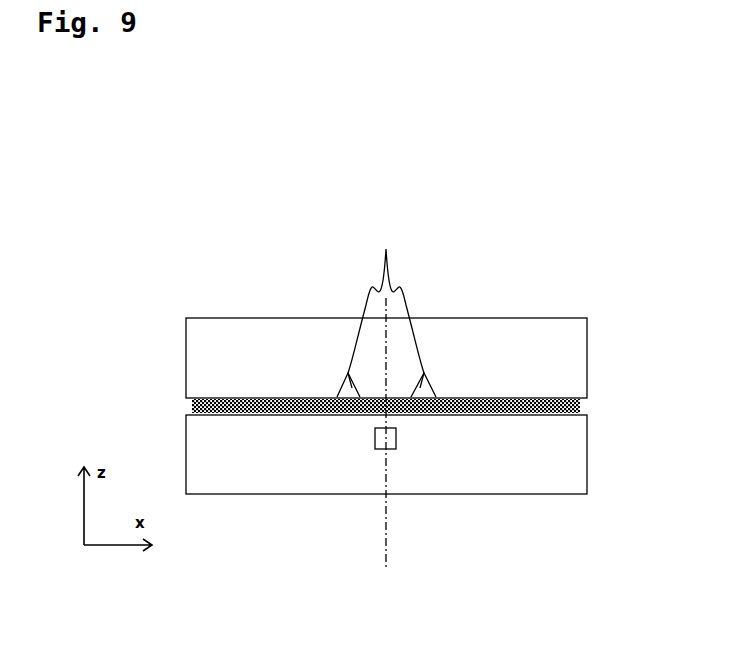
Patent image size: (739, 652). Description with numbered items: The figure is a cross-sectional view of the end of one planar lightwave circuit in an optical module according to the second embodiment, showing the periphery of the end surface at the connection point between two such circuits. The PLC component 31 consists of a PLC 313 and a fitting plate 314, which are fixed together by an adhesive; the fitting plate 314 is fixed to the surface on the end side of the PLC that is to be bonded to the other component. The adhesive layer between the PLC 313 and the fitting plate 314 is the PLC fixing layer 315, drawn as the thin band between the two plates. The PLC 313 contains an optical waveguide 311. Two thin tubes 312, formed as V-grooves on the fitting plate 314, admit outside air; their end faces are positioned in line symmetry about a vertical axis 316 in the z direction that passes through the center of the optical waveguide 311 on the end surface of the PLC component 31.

The PLC component 31 is at (394, 168).
The optical waveguide 311 is at (389, 438).
The thin tubes (V-grooves) 312 is at (386, 307).
The PLC 313 is at (577, 463).
The fitting plate 314 is at (585, 344).
The PLC fixing layer 315 is at (580, 405).
The axis 316 is at (386, 532).